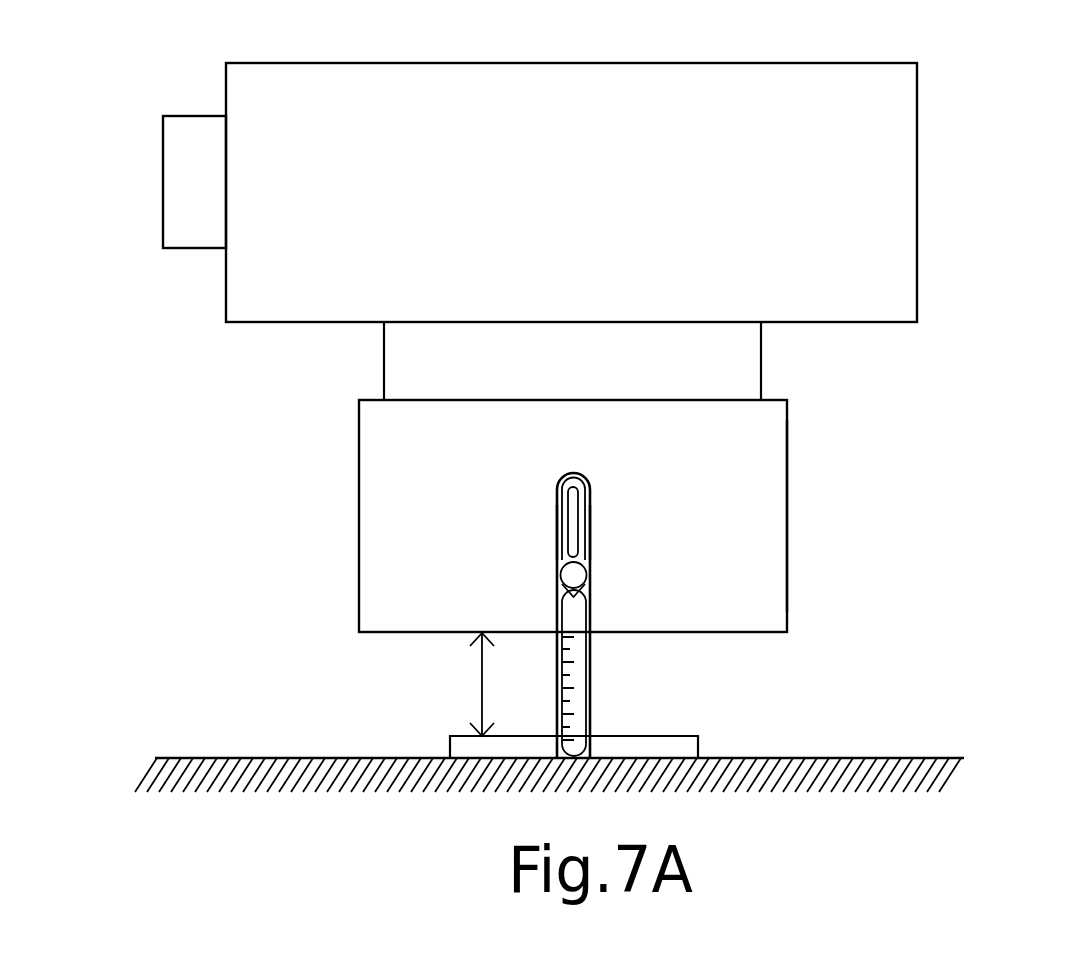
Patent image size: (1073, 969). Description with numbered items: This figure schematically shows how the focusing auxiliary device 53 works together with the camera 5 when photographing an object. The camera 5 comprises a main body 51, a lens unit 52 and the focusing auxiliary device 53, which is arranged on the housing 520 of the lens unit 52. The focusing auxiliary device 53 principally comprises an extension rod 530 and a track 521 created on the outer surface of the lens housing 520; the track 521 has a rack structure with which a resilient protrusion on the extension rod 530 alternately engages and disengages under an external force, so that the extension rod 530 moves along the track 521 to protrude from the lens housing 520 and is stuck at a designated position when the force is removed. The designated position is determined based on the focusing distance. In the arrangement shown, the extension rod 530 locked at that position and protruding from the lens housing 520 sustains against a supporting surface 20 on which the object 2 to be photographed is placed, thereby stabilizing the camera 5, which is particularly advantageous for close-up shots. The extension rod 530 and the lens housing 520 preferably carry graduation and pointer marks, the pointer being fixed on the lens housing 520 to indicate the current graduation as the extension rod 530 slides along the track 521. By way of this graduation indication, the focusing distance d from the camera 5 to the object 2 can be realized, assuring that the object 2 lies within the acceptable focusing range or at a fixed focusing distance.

The camera 5 is at (970, 212).
The main body 51 is at (757, 105).
The lens unit 52 is at (795, 440).
The lens housing 520 is at (771, 536).
The track 521 is at (555, 523).
The focusing auxiliary device 53 is at (553, 560).
The extension rod 530 is at (578, 710).
The object 2 is at (665, 747).
The supporting surface 20 is at (882, 756).
The focusing distance d is at (489, 684).